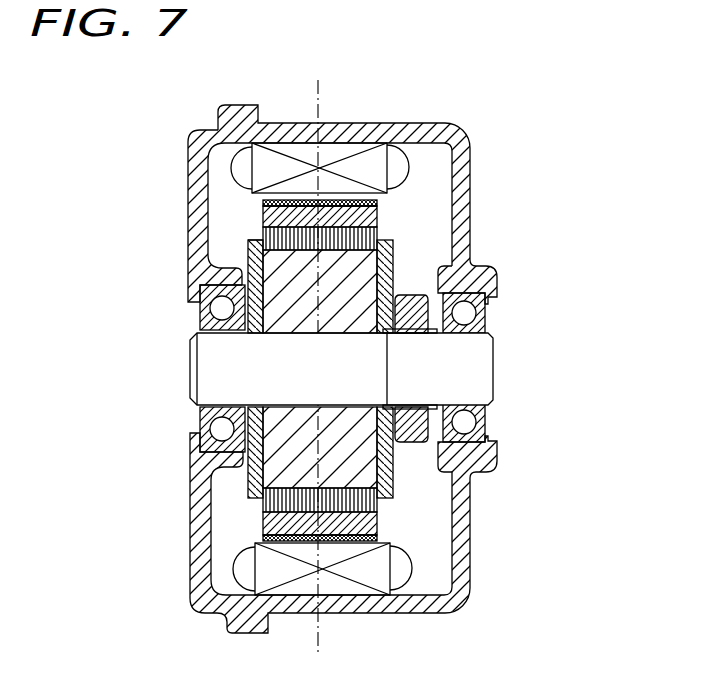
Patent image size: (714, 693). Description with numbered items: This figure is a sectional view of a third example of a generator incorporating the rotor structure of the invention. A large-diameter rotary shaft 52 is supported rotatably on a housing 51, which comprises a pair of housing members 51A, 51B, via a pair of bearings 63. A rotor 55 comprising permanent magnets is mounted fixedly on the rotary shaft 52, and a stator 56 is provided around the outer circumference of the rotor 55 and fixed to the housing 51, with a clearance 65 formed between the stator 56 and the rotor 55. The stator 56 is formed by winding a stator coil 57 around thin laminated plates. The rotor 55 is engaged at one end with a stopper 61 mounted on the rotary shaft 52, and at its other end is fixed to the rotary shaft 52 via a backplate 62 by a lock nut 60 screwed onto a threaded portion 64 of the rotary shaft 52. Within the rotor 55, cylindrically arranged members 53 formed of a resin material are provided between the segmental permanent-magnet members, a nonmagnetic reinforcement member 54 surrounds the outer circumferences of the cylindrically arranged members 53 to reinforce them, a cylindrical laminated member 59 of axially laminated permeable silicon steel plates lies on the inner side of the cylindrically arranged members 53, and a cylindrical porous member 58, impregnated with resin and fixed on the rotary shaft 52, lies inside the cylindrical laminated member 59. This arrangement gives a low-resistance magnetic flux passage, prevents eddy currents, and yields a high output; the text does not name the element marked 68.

The housing 51 is at (432, 128).
The housing member 51A is at (462, 176).
The housing member 51B is at (196, 203).
The rotary shaft 52 is at (466, 373).
The cylindrically arranged members 53 is at (374, 210).
The reinforcement member 54 is at (281, 198).
The rotor 55 is at (356, 278).
The stator 56 is at (361, 166).
The stator coil 57 is at (235, 165).
The cylindrical porous member 58 is at (309, 453).
The cylindrical laminated member 59 is at (356, 238).
The lock nut 60 is at (487, 466).
The stopper 61 is at (250, 258).
The backplate 62 is at (425, 298).
The bearings 63 is at (486, 320).
The threaded portion 64 is at (428, 400).
The clearance 65 is at (298, 198).
The inner rib 68 is at (298, 289).